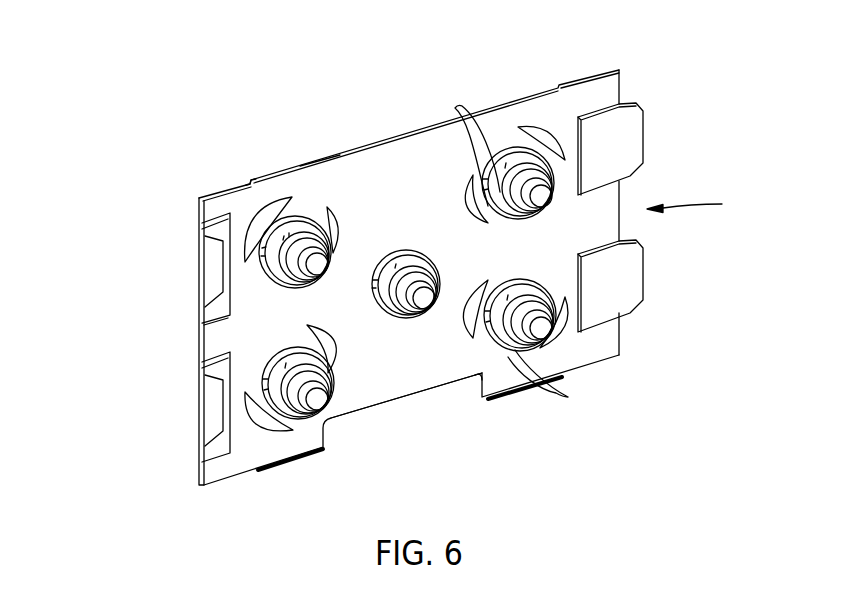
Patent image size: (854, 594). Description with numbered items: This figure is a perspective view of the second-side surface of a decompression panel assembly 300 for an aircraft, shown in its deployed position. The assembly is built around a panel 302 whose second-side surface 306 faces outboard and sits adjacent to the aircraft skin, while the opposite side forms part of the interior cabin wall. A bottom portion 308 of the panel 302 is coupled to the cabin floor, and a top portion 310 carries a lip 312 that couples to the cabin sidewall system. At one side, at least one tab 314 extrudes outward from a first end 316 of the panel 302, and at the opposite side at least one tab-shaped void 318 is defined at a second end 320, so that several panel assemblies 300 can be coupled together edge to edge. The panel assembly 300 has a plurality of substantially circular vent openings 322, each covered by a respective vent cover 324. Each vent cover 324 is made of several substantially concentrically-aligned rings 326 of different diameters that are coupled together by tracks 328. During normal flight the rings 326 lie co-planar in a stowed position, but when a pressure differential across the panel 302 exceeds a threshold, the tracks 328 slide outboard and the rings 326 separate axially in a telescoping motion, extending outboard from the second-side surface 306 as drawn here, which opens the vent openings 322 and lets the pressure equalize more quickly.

The decompression panel assembly 300 is at (246, 86).
The panel 302 is at (592, 90).
The second-side surface 306 is at (206, 336).
The bottom portion 308 is at (398, 413).
The top portion 310 is at (227, 188).
The lip 312 is at (321, 168).
The tab 314 is at (622, 283).
The first end 316 is at (703, 202).
The tab-shaped void 318 is at (212, 403).
The second end 320 is at (127, 286).
The vent opening 322 is at (277, 213).
The vent cover 324 is at (325, 227).
The rings 326 is at (566, 392).
The tracks 328 is at (458, 108).